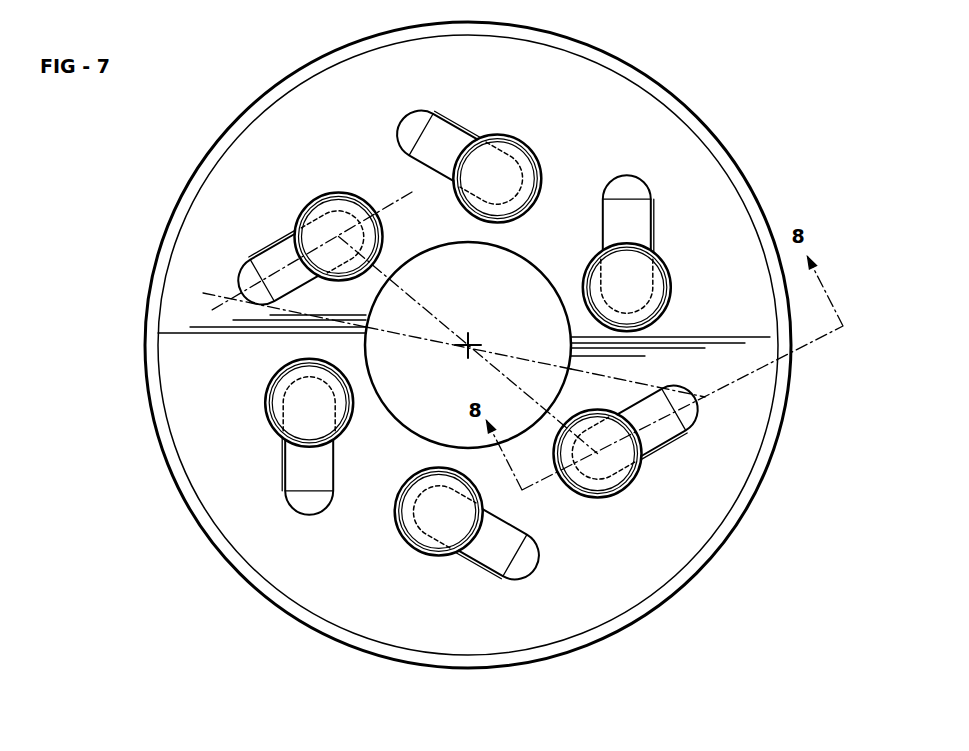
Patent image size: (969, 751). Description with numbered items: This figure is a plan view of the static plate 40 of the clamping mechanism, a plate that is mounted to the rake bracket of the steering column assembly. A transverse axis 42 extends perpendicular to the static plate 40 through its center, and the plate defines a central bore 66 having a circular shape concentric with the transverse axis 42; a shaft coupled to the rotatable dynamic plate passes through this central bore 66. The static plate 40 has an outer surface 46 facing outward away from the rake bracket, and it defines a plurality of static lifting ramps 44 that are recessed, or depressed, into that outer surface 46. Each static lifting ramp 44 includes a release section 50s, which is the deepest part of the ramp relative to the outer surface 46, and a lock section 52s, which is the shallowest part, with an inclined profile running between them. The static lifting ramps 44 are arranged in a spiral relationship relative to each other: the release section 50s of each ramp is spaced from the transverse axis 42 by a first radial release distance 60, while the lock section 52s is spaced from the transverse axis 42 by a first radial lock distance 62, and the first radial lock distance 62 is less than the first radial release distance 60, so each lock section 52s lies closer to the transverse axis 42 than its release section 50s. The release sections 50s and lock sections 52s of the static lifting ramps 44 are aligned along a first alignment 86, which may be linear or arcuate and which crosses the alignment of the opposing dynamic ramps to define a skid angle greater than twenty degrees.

The static plate 40 is at (607, 70).
The transverse axis 42 is at (472, 342).
The static lifting ramps 44 is at (291, 231).
The outer surface 46 is at (354, 588).
The release section 50s is at (332, 194).
The lock section 52s is at (250, 260).
The first radial release distance 60 is at (432, 307).
The first radial lock distance 62 is at (573, 377).
The central bore 66 is at (505, 257).
The first alignment 86 is at (218, 294).